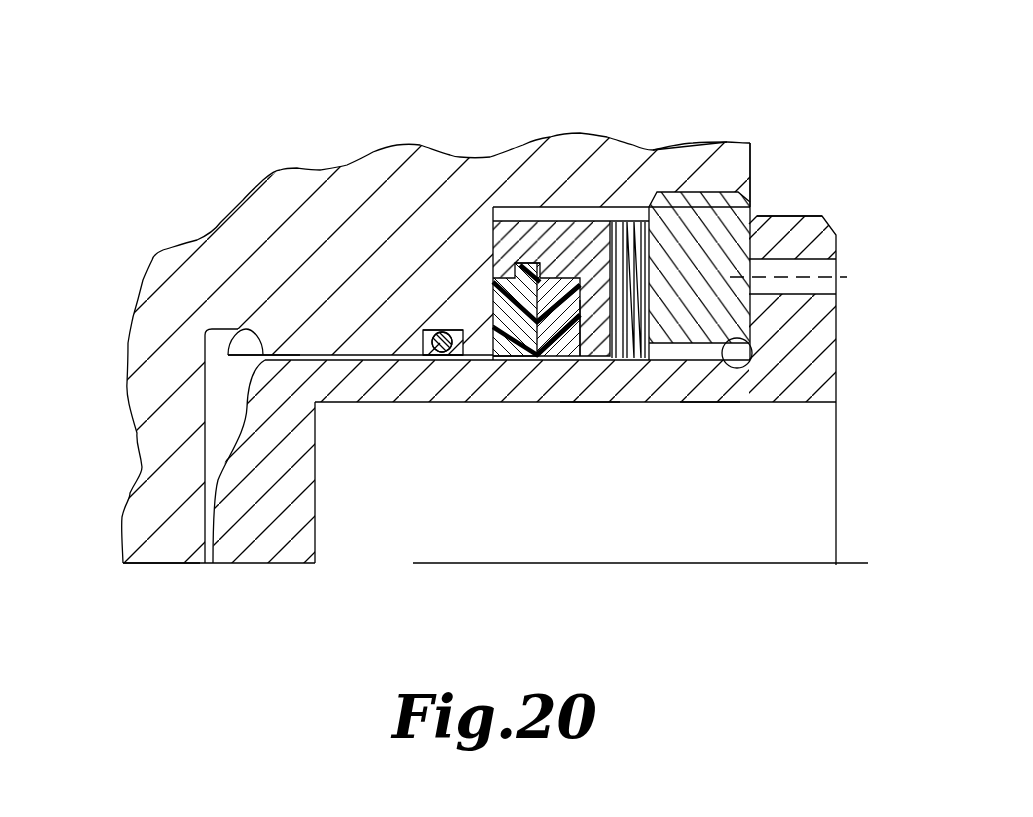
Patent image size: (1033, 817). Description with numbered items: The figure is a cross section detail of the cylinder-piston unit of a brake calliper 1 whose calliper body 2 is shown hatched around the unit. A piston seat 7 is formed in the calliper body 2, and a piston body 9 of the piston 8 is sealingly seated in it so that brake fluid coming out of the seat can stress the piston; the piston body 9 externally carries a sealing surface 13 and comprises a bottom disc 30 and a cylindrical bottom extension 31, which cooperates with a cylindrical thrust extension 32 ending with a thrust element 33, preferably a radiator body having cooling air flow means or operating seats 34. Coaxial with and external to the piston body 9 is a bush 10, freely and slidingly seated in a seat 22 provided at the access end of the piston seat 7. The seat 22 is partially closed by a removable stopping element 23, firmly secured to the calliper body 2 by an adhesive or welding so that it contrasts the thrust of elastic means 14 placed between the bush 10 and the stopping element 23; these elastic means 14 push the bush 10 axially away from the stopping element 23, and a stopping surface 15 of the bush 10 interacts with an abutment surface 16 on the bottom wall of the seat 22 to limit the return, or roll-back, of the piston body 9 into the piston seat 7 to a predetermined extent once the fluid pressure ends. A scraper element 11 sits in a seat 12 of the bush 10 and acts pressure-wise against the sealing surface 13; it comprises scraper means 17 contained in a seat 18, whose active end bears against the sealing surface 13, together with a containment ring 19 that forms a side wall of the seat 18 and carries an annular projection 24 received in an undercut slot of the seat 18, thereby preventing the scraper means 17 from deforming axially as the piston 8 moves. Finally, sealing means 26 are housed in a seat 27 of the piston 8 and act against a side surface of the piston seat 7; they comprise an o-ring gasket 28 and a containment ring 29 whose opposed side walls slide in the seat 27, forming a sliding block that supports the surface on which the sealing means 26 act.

The brake calliper 1 is at (693, 127).
The calliper body 2 is at (428, 175).
The piston seat 7 is at (303, 358).
The piston 8 is at (787, 182).
The piston body 9 is at (587, 382).
The bush 10 is at (500, 252).
The scraper element 11 is at (517, 358).
The seat 12 is at (557, 318).
The sealing surface 13 is at (352, 355).
The elastic means 14 is at (632, 355).
The stopping surface 15 is at (725, 367).
The abutment surface 16 is at (752, 243).
The scraper means 17 is at (572, 355).
The seat 18 is at (563, 345).
The containment ring 19 is at (540, 340).
The seat 22 is at (583, 218).
The stopping element 23 is at (712, 245).
The annular projection 24 is at (533, 262).
The sealing means 26 is at (433, 372).
The seat 27 is at (430, 345).
The o-ring gasket 28 is at (430, 327).
The containment ring 29 is at (450, 360).
The bottom disc 30 is at (268, 478).
The cylindrical bottom extension 31 is at (352, 390).
The cylindrical thrust extension 32 is at (707, 392).
The thrust element 33 is at (820, 217).
The operating seats 34 is at (827, 283).